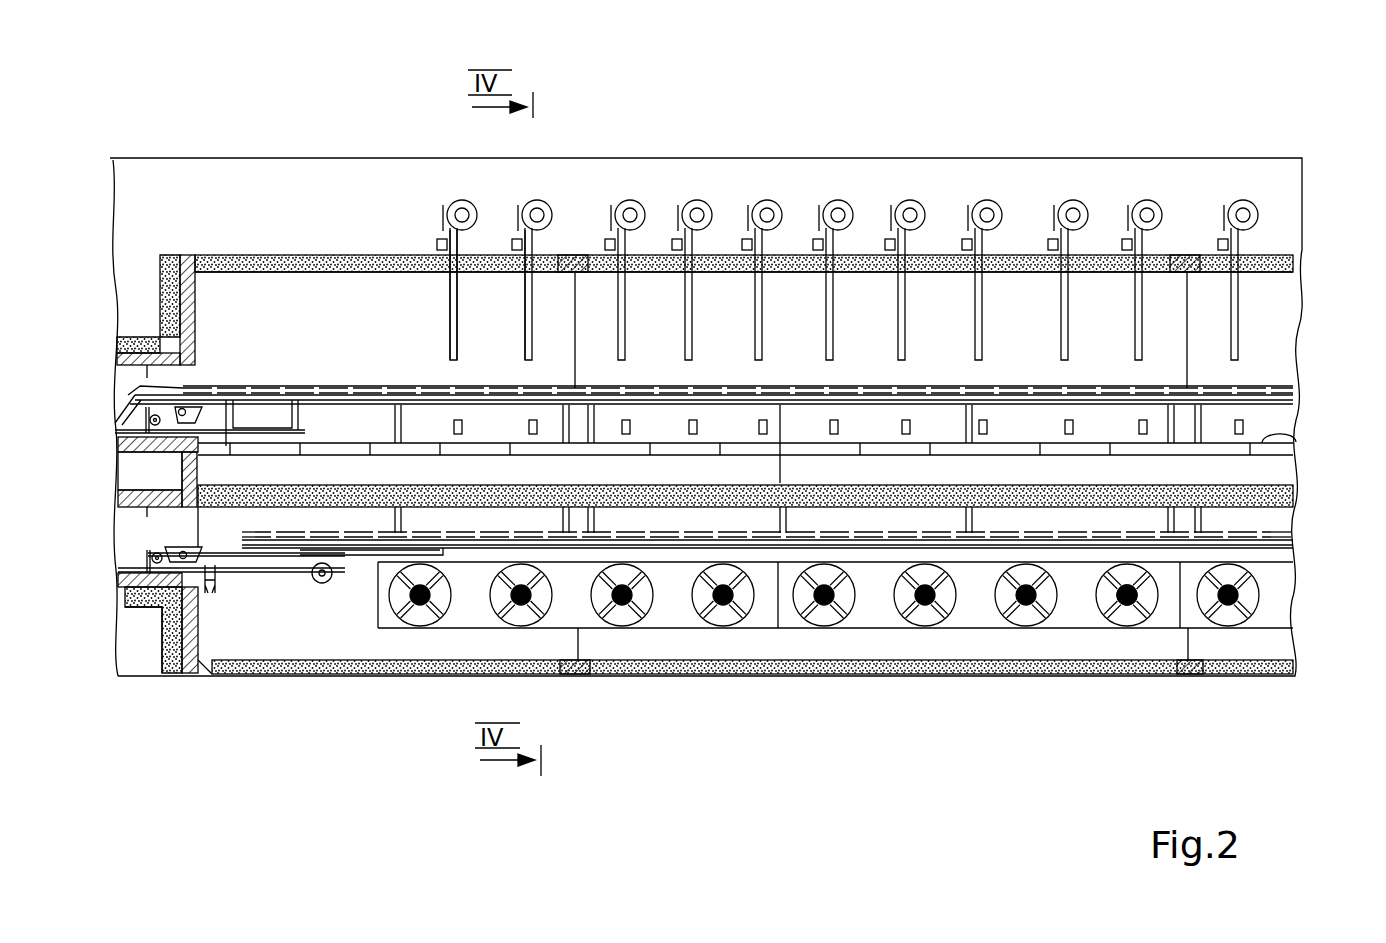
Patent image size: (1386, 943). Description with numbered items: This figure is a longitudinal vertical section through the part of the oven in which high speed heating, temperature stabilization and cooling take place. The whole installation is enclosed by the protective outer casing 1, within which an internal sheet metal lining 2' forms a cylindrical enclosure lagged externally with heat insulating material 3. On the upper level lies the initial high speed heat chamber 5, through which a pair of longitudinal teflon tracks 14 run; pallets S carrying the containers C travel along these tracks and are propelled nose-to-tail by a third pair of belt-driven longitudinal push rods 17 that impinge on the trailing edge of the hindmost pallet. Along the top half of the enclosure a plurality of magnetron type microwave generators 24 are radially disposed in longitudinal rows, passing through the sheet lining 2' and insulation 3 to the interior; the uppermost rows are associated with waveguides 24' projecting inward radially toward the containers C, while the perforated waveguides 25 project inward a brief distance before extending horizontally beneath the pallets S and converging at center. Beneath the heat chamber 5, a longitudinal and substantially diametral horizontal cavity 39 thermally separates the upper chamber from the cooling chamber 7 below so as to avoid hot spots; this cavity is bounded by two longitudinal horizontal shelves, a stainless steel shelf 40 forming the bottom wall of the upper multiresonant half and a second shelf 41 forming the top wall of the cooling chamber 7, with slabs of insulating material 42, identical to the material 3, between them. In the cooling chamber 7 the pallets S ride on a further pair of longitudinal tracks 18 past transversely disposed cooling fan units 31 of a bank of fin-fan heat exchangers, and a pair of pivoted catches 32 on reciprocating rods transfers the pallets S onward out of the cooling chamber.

The protective outer casing 1 is at (690, 158).
The internal sheet metal lining 2' is at (744, 177).
The heat insulating material 3 is at (357, 257).
The initial high speed heat chamber 5 is at (428, 292).
The cooling chamber 7 is at (812, 640).
The longitudinal teflon tracks 14 is at (452, 422).
The third pair of longitudinal push rods 17 is at (276, 410).
The longitudinal tracks 18 is at (688, 546).
The magnetron type microwave generators 24 is at (847, 198).
The waveguides 24' is at (609, 298).
The waveguides 25 is at (537, 428).
The cooling fan units 31 is at (1130, 602).
The pivoted catches 32 is at (443, 550).
The horizontal cavity 39 is at (808, 476).
The longitudinal horizontal shelf 40 is at (1265, 437).
The longitudinal horizontal shelf 41 is at (1290, 512).
The slabs of insulating material 42 is at (1262, 481).
The containers C is at (1245, 388).
The pallets S is at (668, 410).